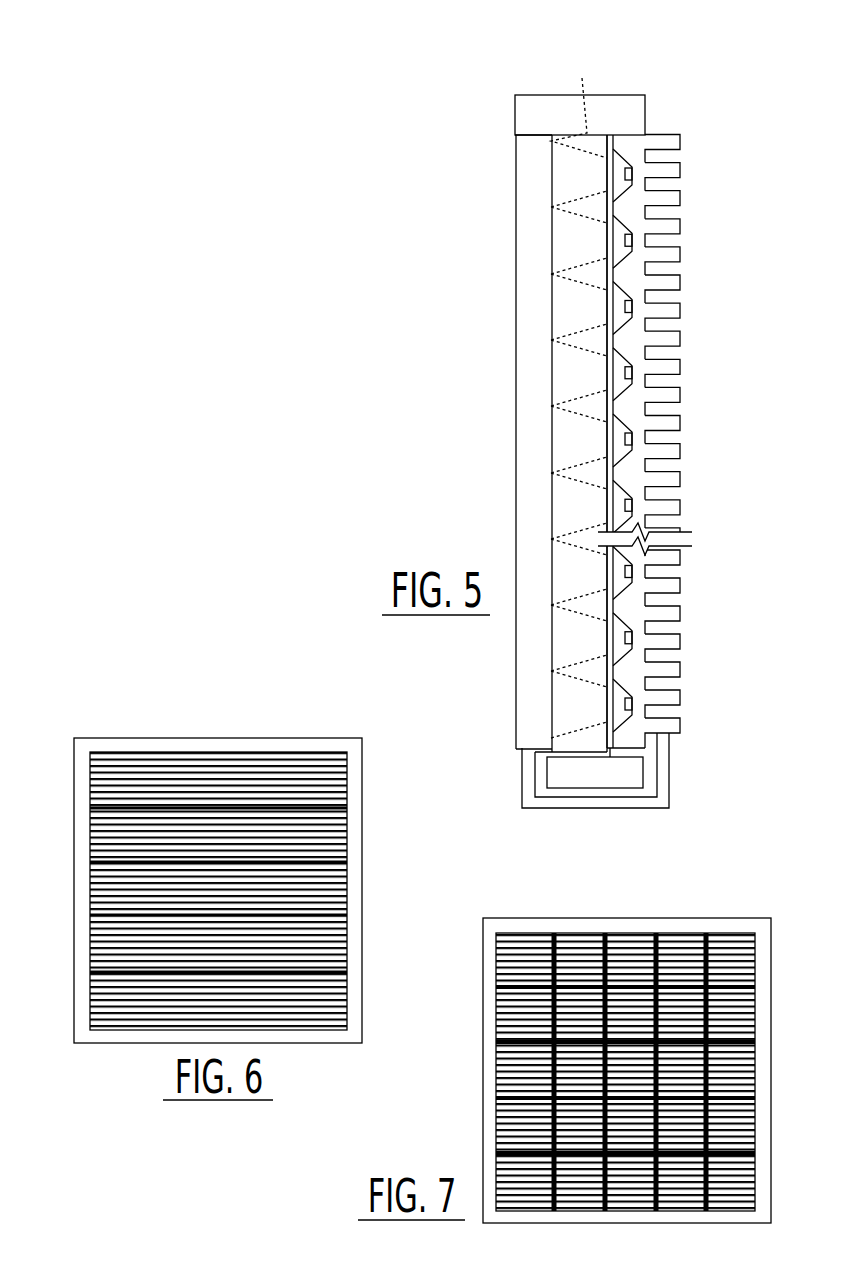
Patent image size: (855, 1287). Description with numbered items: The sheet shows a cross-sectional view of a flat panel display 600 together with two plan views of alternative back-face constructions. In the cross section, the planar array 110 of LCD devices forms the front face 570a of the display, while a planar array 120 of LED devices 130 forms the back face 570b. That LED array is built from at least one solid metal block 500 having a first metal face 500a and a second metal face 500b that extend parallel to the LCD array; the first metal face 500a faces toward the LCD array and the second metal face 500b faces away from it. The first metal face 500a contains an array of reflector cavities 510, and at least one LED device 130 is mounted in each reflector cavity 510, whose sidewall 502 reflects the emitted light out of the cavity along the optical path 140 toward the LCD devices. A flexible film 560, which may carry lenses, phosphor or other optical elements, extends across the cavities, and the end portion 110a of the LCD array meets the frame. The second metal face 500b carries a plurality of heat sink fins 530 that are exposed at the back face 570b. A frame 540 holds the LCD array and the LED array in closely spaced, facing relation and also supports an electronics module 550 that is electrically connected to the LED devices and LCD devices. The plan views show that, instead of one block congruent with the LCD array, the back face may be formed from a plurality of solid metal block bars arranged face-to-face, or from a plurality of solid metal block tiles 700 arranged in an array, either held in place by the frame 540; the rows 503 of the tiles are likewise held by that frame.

In FIG. 5, the flat panel display 600 is at (478, 97).
In FIG. 6, the flat panel display 600 is at (90, 830).
In FIG. 5, the planar array of LCD devices 110 is at (528, 187).
In FIG. 5, the end portion of display panel 110a is at (533, 133).
In FIG. 5, the planar array of LED devices 120 is at (732, 141).
In FIG. 5, the LED device 130 is at (633, 244).
In FIG. 5, the optical path 140 is at (579, 394).
In FIG. 5, the solid metal block 500 is at (637, 148).
In FIG. 5, the first metal face 500a is at (619, 140).
In FIG. 5, the second metal face 500b is at (684, 138).
In FIG. 5, the sidewall 502 is at (625, 197).
In FIG. 7, the heat dissipating fin row 503 is at (632, 962).
In FIG. 5, the reflector cavity 510 is at (628, 172).
In FIG. 5, the heat sink fins 530 is at (680, 280).
In FIG. 6, the heat sink fins 530 is at (187, 782).
In FIG. 5, the frame 540 is at (547, 107).
In FIG. 6, the frame 540 is at (307, 745).
In FIG. 7, the frame 540 is at (740, 922).
In FIG. 5, the electronics module 550 is at (583, 785).
In FIG. 5, the flexible film 560 is at (605, 136).
In FIG. 5, the front face 570a is at (511, 392).
In FIG. 5, the back face 570b is at (703, 436).
In FIG. 7, the solid metal block tiles 700 is at (532, 935).